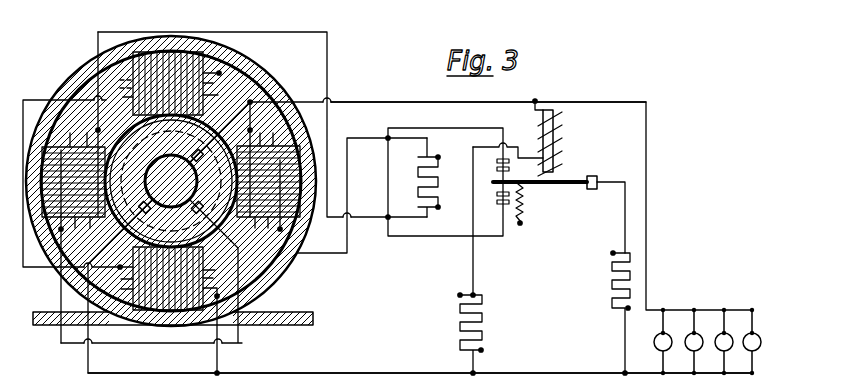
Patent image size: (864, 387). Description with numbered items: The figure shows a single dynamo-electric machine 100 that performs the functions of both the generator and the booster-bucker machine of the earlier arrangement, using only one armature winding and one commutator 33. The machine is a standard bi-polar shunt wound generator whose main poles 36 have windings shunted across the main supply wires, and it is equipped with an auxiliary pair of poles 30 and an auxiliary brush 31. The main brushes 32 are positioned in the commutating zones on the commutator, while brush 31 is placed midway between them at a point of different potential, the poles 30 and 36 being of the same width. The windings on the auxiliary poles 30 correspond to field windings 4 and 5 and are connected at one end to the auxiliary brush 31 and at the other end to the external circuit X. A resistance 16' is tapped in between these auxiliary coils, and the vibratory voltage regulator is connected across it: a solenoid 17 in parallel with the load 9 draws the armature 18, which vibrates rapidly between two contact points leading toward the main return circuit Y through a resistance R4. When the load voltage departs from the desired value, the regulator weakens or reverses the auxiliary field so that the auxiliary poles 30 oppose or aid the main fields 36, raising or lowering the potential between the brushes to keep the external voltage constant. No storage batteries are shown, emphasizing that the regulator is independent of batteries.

The dynamo-electric machine 100 is at (77, 82).
The main poles 36 is at (133, 70).
The auxiliary poles 30 is at (60, 148).
The main brushes 32 is at (196, 152).
The commutator 33 is at (171, 181).
The auxiliary brush 31 is at (151, 265).
The field winding 4 is at (82, 231).
The field winding 5 is at (261, 233).
The external circuit X is at (367, 102).
The main return circuit Y is at (345, 373).
The resistance 16' is at (414, 177).
The solenoid 17 is at (556, 134).
The armature 18 is at (568, 185).
The resistor R4 is at (612, 266).
The load 9 is at (698, 310).